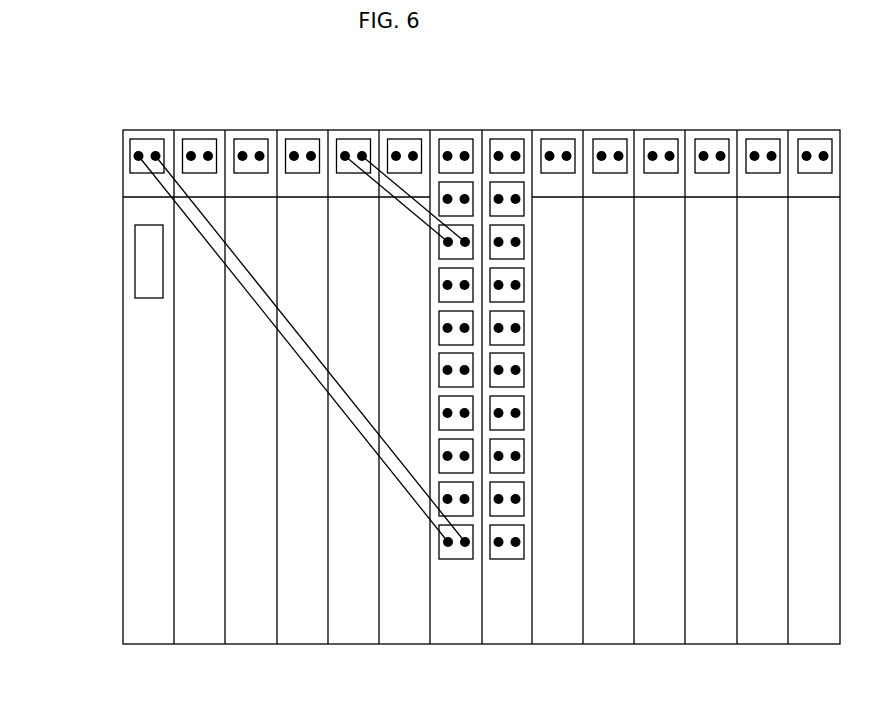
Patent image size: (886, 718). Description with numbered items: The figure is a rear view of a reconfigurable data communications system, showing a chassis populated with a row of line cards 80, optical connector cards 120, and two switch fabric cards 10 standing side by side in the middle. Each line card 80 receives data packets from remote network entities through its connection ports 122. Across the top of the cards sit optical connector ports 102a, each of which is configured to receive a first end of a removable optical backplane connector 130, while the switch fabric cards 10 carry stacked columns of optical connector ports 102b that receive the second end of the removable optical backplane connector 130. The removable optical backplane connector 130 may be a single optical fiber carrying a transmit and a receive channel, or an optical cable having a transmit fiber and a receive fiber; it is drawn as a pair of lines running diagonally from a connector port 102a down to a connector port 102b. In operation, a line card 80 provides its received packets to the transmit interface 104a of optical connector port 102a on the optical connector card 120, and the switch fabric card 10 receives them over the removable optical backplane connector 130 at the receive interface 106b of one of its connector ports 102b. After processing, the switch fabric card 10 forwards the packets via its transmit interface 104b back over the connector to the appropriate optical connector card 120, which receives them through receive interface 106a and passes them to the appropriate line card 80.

The optical connector card 120 is at (122, 152).
The line card 80 is at (139, 525).
The switch fabric card 10 is at (452, 126).
The optical connector port 102a is at (136, 172).
The transmit interface 104a is at (138, 150).
The receive interface 106a is at (156, 150).
The connection port 122 is at (141, 261).
The removable optical backplane connector 130 is at (262, 327).
The optical connector port 102b is at (446, 254).
The transmit interface 104b is at (465, 246).
The receive interface 106b is at (447, 256).